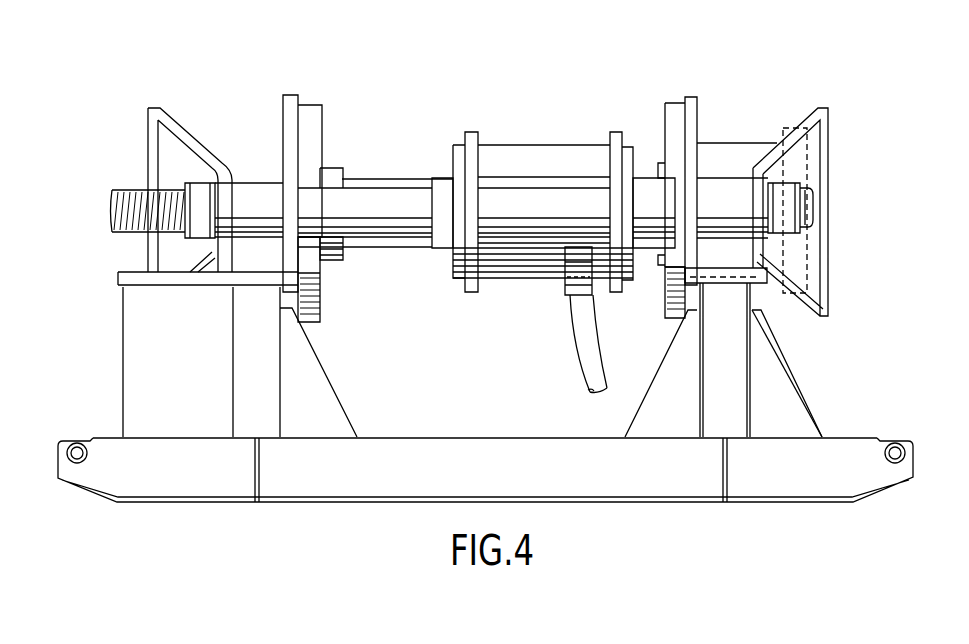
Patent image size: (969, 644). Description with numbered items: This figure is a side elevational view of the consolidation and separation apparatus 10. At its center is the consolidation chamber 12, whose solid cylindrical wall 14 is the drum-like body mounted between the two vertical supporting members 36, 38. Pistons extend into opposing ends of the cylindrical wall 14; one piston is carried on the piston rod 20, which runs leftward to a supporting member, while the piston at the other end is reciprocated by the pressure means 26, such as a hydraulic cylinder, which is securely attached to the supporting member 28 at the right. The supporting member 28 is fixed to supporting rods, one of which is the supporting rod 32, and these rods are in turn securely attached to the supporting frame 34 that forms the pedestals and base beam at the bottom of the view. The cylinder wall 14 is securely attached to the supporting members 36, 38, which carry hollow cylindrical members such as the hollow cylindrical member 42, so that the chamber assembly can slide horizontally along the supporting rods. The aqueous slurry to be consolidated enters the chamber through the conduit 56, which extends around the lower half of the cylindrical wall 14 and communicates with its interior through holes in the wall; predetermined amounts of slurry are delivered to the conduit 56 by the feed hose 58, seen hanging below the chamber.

The apparatus 10 is at (538, 112).
The consolidation chamber 12 is at (547, 140).
The cylindrical wall 14 is at (507, 145).
The piston rod 20 is at (372, 178).
The pressure means 26 is at (722, 143).
The supporting member 28 is at (697, 110).
The supporting rod 32 is at (363, 222).
The supporting frame 34 is at (802, 407).
The supporting member 36 is at (465, 135).
The supporting member 38 is at (618, 137).
The hollow cylindrical member 42 is at (508, 235).
The conduit 56 is at (565, 285).
The feed hose 58 is at (577, 328).